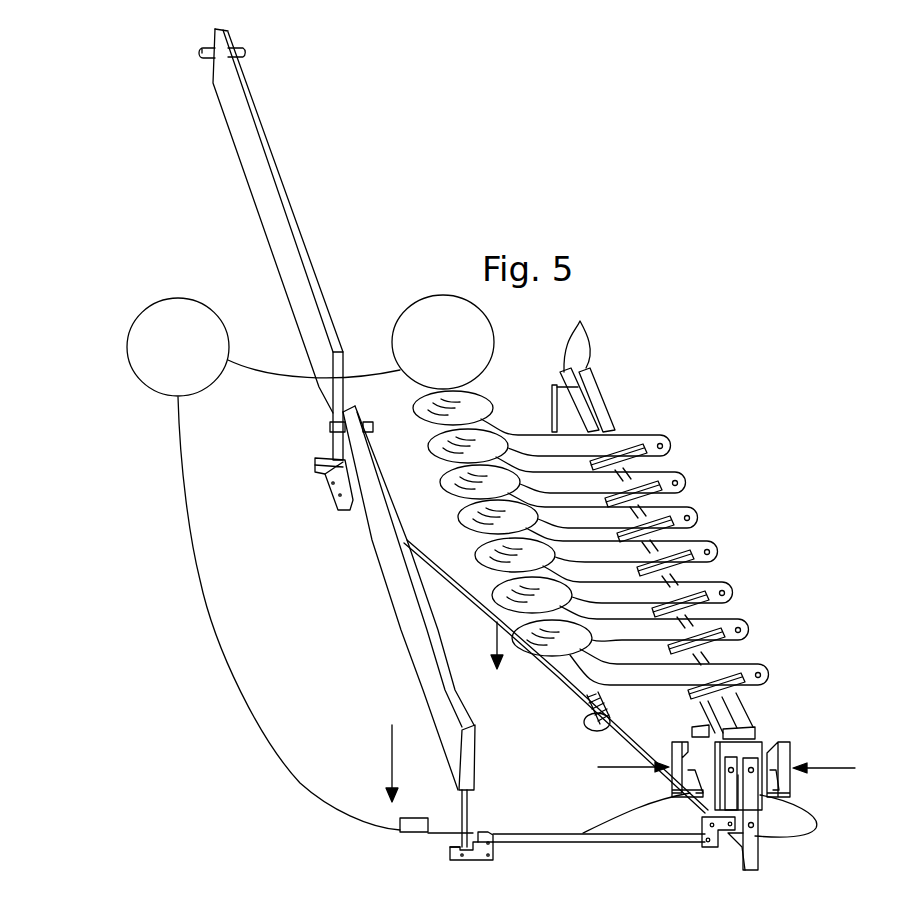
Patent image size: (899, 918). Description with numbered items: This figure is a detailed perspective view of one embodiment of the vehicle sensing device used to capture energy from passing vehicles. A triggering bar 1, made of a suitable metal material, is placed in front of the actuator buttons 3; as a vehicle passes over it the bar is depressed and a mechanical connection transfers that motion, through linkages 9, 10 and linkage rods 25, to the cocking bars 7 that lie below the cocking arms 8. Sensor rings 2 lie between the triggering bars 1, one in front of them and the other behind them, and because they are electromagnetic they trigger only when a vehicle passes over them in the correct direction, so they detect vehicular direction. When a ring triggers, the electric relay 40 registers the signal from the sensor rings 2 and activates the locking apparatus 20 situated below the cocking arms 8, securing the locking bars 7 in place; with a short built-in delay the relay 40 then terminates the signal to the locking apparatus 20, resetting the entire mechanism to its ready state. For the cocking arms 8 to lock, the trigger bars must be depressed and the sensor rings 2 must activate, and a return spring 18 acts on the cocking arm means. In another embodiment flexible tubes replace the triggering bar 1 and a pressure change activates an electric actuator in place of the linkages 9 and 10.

The triggering bar 1 is at (240, 163).
The sensor ring 2 is at (127, 343).
The actuator button 3 is at (493, 400).
The cocking bar 7 is at (583, 365).
The cocking arm 8 is at (668, 437).
The linkage 9 is at (632, 445).
The linkage 10 is at (332, 497).
The return spring 18 is at (592, 730).
The locking apparatus 20 is at (792, 757).
The linkage rod 25 is at (567, 700).
The electric relay 40 is at (410, 833).